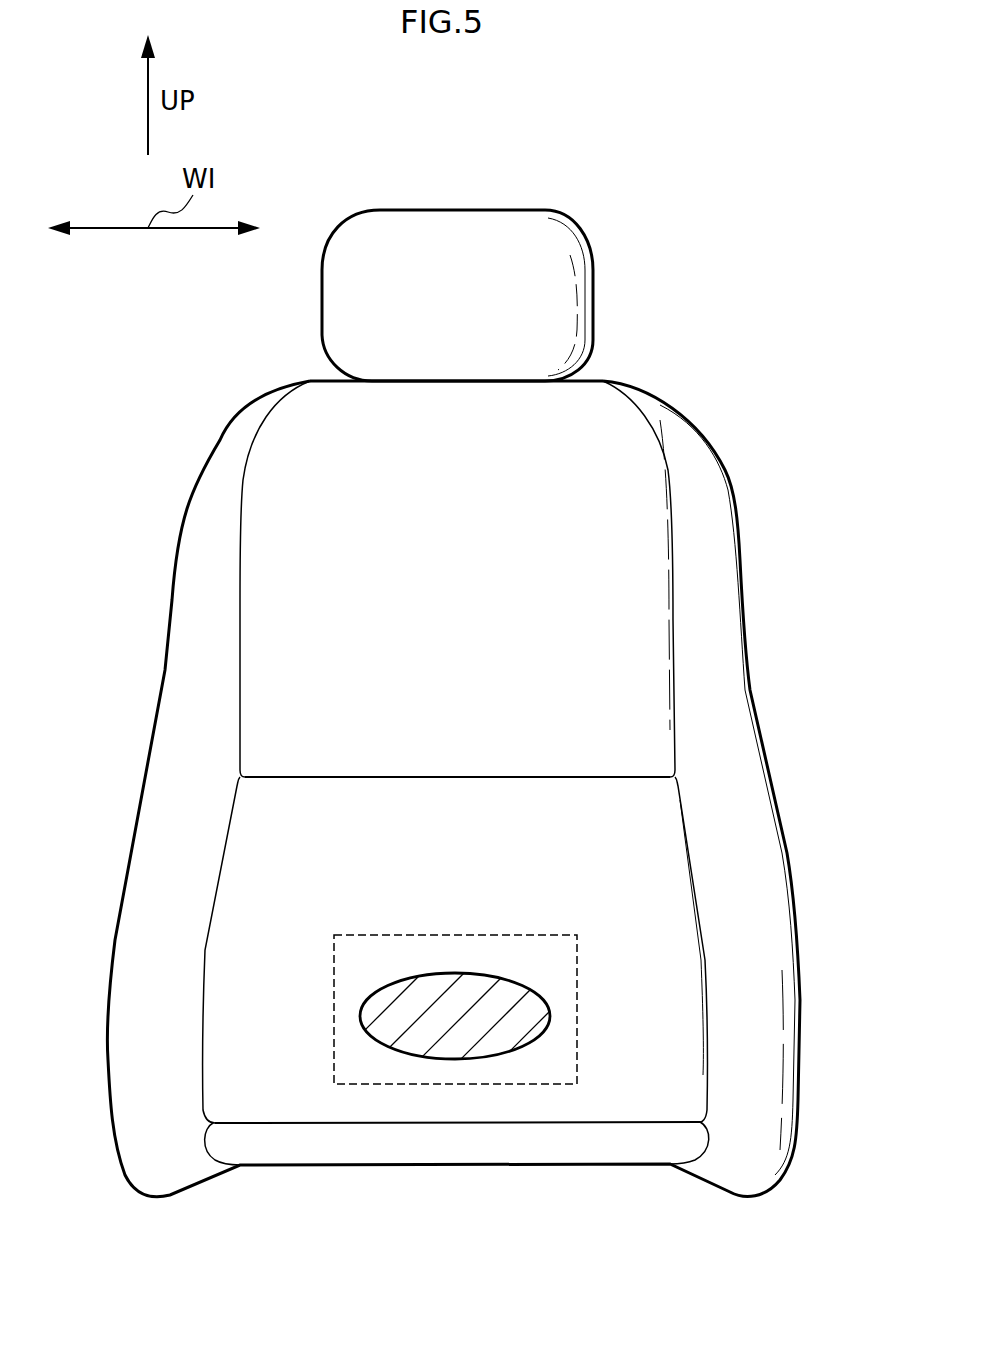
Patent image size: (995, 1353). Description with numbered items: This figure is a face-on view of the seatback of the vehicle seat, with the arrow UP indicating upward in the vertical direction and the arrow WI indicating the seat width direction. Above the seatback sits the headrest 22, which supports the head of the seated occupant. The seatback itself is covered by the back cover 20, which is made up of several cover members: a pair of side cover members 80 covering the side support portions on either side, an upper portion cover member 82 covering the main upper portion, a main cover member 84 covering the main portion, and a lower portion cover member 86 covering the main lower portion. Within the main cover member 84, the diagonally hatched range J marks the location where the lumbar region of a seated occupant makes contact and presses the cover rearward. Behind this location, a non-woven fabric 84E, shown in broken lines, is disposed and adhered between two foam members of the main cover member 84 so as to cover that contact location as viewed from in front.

The back cover 20 is at (728, 430).
The headrest 22 is at (595, 194).
The side cover members 80 is at (190, 596).
The upper portion cover member 82 is at (645, 638).
The main cover member 84 is at (243, 932).
The non-woven fabric 84E is at (577, 987).
The diagonally hatched range J is at (548, 1030).
The lower portion cover member 86 is at (368, 1143).